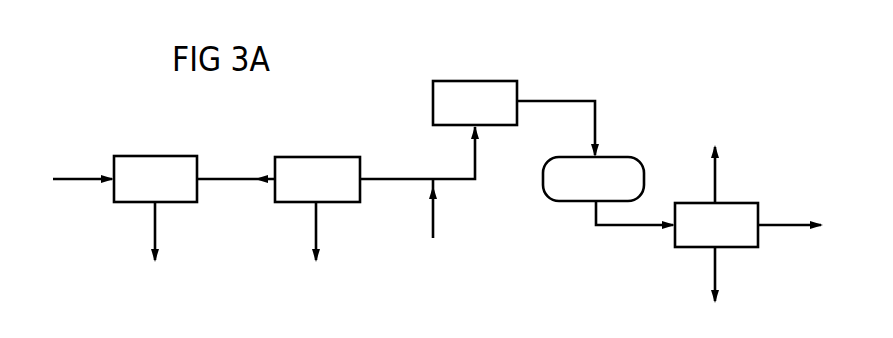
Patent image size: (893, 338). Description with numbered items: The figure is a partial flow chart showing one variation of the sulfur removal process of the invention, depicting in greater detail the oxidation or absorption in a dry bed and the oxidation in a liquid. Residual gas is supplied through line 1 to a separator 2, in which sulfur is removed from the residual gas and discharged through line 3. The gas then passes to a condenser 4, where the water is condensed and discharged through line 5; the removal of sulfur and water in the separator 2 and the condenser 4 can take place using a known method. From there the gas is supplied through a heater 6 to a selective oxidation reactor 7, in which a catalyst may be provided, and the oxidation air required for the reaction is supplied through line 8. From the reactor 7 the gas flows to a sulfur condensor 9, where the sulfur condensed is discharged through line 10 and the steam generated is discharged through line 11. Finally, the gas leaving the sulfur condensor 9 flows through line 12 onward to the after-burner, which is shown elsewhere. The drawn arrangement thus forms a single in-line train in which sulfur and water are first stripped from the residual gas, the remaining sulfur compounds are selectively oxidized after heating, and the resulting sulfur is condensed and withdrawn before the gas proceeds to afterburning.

The line 1 is at (63, 177).
The separator 2 is at (163, 156).
The line 3 is at (155, 222).
The condenser 4 is at (327, 157).
The line 5 is at (316, 228).
The heater 6 is at (478, 81).
The selective oxidation reactor 7 is at (615, 157).
The line 8 is at (433, 218).
The sulfur condensor 9 is at (740, 203).
The line 10 is at (716, 272).
The line 11 is at (717, 158).
The line 12 is at (800, 225).